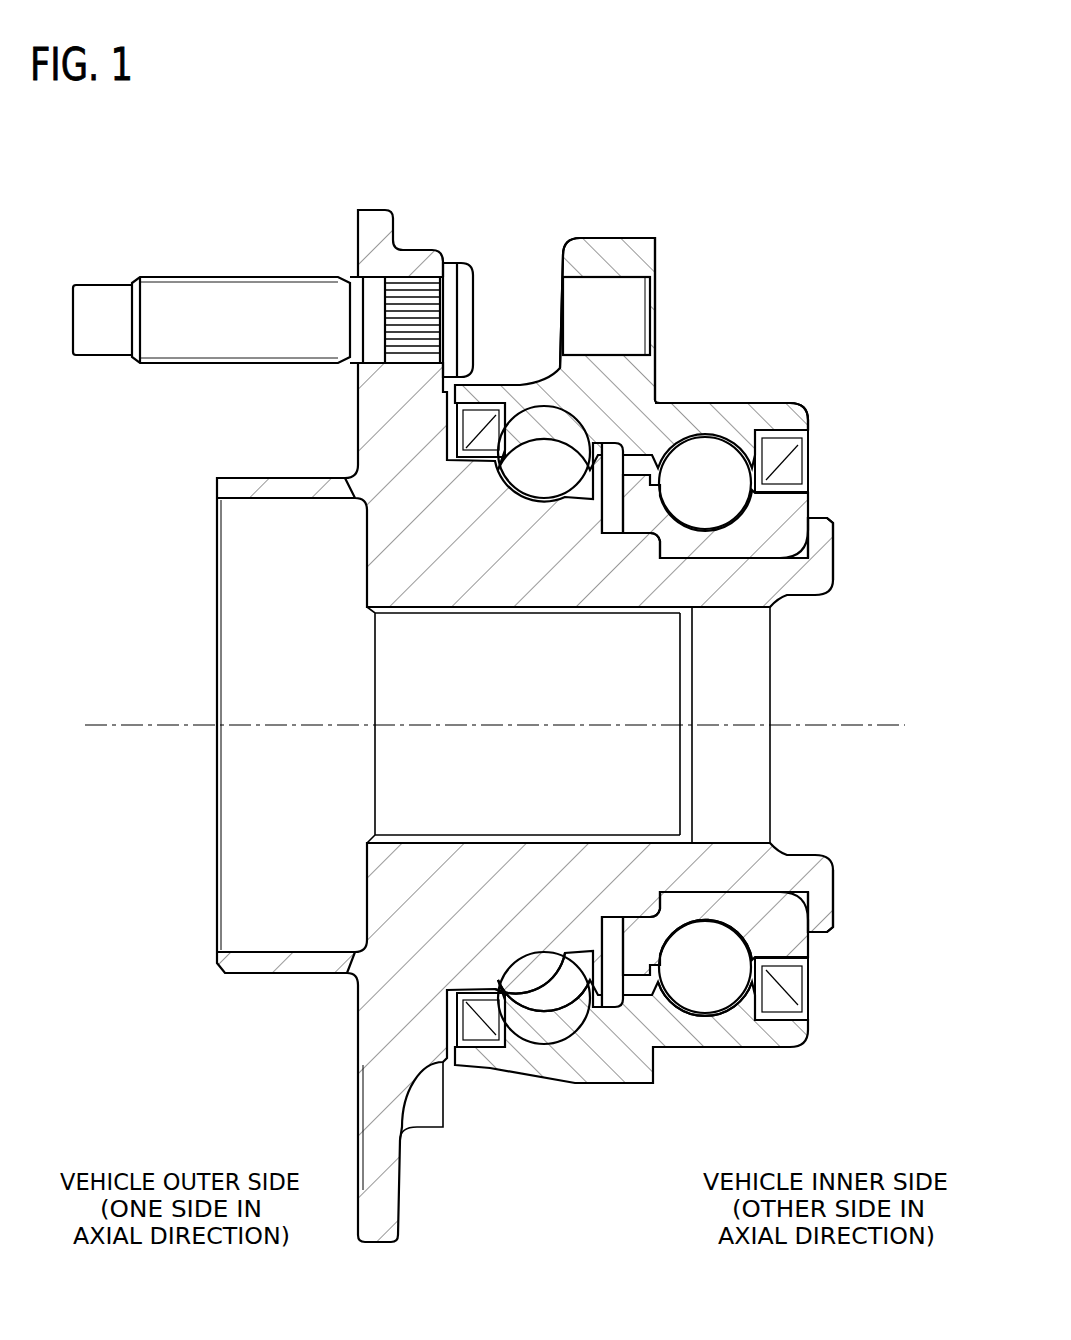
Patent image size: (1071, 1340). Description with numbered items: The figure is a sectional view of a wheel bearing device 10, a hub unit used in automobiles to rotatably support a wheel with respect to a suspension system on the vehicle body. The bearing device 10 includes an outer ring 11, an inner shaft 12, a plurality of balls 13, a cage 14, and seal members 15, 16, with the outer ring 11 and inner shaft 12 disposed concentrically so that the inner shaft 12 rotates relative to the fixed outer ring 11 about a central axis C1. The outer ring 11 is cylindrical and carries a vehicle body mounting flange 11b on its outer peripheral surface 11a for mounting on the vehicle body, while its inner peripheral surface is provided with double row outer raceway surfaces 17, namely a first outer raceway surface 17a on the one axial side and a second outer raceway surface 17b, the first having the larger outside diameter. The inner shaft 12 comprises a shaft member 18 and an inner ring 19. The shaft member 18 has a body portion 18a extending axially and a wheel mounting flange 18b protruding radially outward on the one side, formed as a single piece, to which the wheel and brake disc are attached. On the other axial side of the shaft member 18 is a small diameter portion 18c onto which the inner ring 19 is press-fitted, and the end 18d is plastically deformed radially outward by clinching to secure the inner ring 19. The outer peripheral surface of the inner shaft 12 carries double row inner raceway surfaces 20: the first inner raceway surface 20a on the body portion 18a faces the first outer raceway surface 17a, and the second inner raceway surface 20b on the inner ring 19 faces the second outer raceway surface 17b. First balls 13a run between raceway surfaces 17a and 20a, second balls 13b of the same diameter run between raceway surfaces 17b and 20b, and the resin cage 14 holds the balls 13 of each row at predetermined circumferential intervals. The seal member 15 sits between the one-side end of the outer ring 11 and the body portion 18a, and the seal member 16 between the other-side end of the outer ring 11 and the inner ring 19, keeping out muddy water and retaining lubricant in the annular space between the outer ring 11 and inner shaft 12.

The wheel bearing device 10 is at (779, 216).
The outer ring 11 is at (795, 397).
The outer peripheral surface 11a is at (688, 402).
The vehicle body mounting flange 11b is at (610, 256).
The inner shaft 12 is at (226, 548).
The balls 13 is at (634, 403).
The first balls 13a is at (541, 430).
The second balls 13b is at (711, 460).
The cage 14 is at (541, 1006).
The seal member 15 is at (481, 1058).
The seal member 16 is at (808, 987).
The double row outer raceway surfaces 17 is at (625, 1114).
The first outer raceway surface 17a is at (557, 1050).
The second outer raceway surface 17b is at (699, 1014).
The shaft member 18 is at (596, 726).
The body portion 18a is at (456, 885).
The wheel mounting flange 18b is at (378, 410).
The small diameter portion 18c is at (727, 900).
The end 18d is at (820, 905).
The inner ring 19 is at (770, 535).
The double row inner raceway surfaces 20 is at (623, 866).
The first inner raceway surface 20a is at (545, 960).
The second inner raceway surface 20b is at (655, 940).
The central axis C1 is at (115, 720).